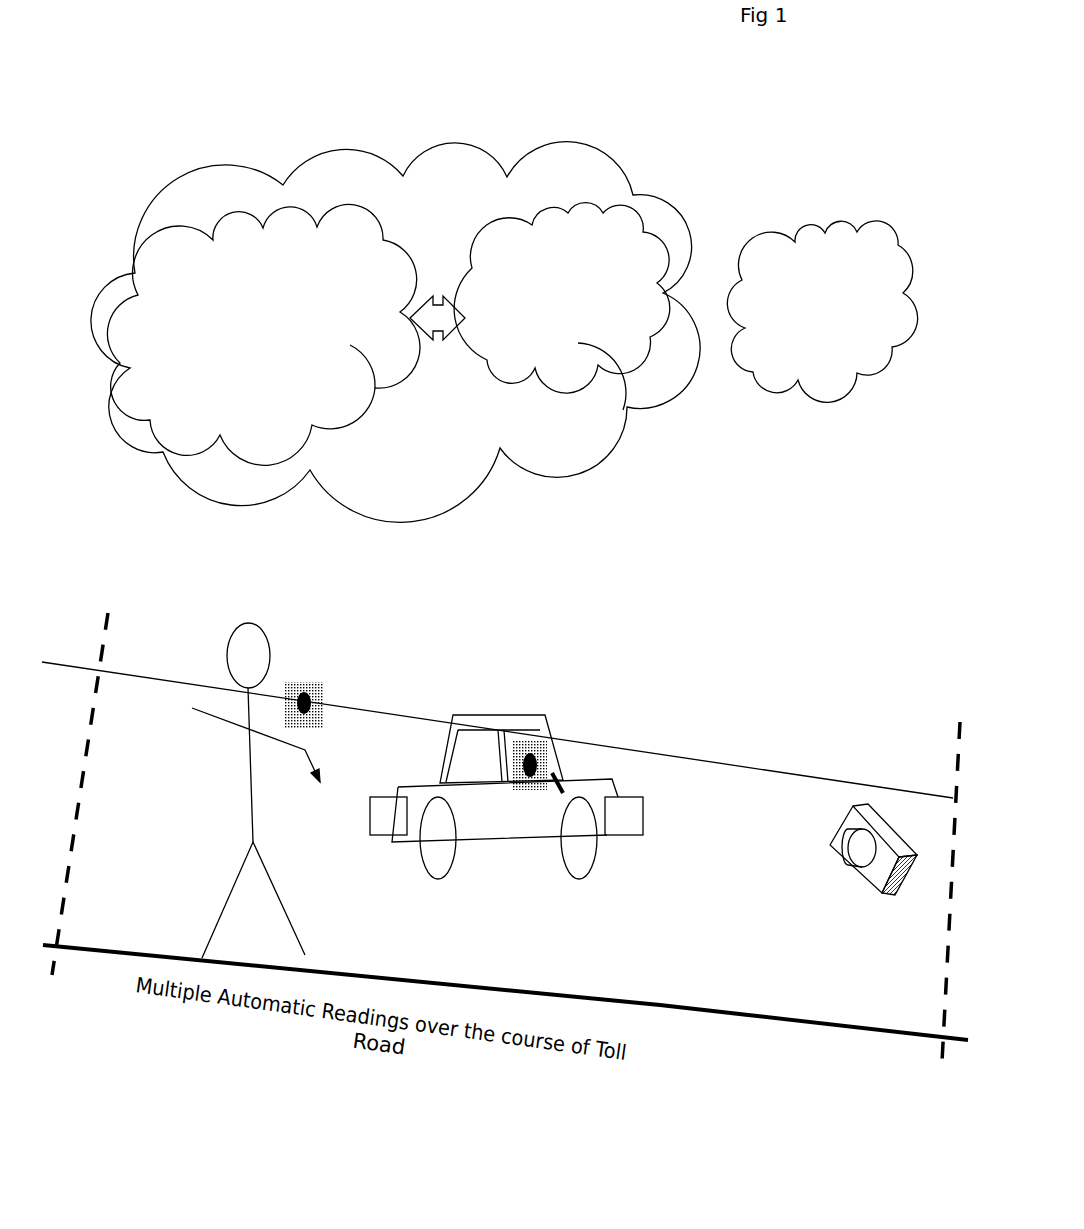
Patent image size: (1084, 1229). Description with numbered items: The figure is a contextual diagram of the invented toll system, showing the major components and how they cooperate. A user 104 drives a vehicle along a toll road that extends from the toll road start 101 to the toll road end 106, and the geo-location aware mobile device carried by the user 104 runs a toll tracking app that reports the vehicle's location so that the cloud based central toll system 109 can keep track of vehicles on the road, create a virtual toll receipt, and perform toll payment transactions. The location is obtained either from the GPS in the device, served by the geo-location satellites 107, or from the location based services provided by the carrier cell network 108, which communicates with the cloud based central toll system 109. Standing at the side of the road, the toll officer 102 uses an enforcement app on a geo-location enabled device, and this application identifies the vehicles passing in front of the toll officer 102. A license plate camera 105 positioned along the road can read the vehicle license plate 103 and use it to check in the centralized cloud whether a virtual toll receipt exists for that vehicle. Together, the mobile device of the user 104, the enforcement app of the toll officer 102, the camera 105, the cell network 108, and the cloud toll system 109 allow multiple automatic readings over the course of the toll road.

The toll road start 101 is at (79, 794).
The toll officer 102 is at (261, 772).
The vehicle license plate 103 is at (376, 820).
The user 104 is at (514, 790).
The license plate camera 105 is at (856, 876).
The toll road end 106 is at (945, 892).
The geo-location satellites 107 is at (822, 311).
The cell network with location based services 108 is at (562, 298).
The cloud based central toll system 109 is at (263, 334).